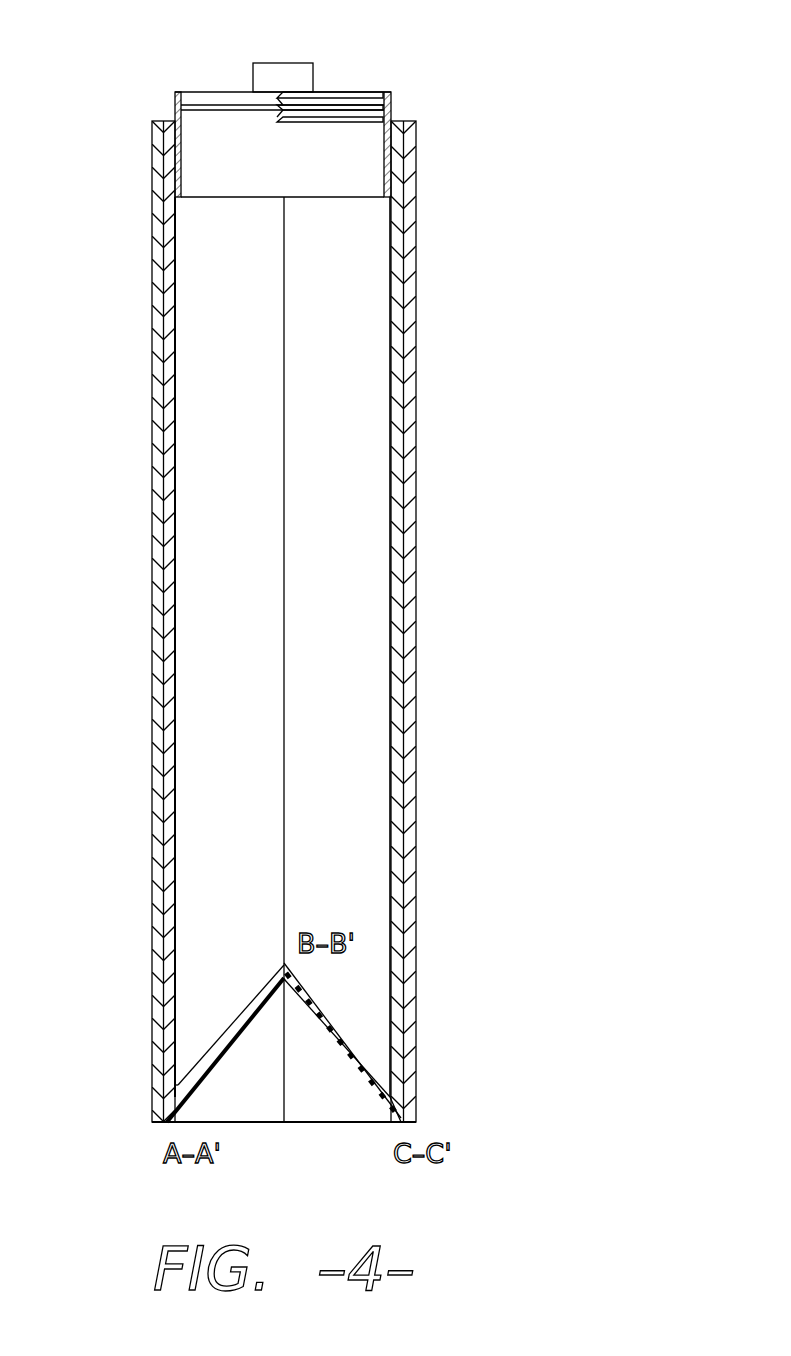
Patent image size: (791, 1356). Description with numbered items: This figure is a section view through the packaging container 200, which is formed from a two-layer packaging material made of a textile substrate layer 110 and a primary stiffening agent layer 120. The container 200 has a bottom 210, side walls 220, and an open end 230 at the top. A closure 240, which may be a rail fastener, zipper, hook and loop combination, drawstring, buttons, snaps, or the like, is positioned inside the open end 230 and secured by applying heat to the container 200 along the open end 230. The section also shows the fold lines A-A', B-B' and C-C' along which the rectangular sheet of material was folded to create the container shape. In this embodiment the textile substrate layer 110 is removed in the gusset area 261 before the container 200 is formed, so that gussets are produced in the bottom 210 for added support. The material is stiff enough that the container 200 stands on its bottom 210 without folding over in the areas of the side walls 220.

The packaging container 200 is at (306, 654).
The textile substrate layer 110 is at (152, 210).
The primary stiffening agent layer 120 is at (178, 362).
The side walls 220 is at (360, 460).
The bottom 210 is at (153, 1128).
The gusset area 261 is at (360, 1073).
The open end 230 is at (278, 103).
The closure 240 is at (352, 76).